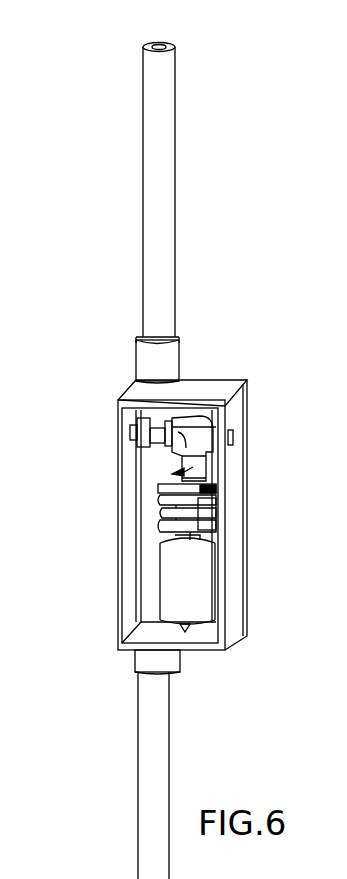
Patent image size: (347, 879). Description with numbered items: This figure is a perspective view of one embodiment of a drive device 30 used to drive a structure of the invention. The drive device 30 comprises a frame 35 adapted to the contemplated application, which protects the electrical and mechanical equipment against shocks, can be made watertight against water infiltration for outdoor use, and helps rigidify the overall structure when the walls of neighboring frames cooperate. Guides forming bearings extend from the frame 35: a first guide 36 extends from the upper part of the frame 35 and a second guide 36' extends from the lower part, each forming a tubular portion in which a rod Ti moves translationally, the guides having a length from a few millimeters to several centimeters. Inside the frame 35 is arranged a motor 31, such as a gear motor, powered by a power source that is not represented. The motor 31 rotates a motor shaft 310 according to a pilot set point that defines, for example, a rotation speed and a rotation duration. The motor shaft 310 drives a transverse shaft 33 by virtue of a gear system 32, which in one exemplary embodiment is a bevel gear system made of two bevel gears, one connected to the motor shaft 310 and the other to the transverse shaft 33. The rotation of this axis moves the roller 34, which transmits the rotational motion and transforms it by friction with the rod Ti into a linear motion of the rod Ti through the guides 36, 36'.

The rod Ti is at (150, 302).
The drive device 30 is at (223, 349).
The motor 31 is at (203, 585).
The gear system 32 is at (204, 437).
The transverse shaft 33 is at (130, 433).
The roller 34 is at (135, 432).
The frame 35 is at (237, 415).
The first guide 36 is at (121, 345).
The second guide 36' is at (119, 666).
The motor shaft 310 is at (172, 473).